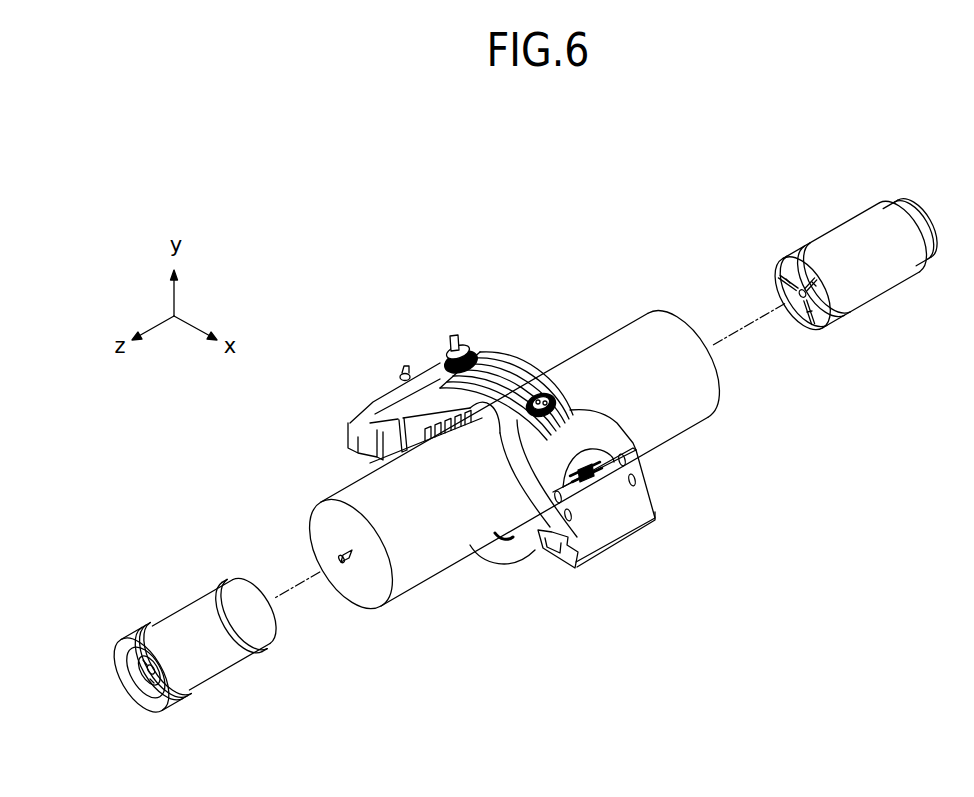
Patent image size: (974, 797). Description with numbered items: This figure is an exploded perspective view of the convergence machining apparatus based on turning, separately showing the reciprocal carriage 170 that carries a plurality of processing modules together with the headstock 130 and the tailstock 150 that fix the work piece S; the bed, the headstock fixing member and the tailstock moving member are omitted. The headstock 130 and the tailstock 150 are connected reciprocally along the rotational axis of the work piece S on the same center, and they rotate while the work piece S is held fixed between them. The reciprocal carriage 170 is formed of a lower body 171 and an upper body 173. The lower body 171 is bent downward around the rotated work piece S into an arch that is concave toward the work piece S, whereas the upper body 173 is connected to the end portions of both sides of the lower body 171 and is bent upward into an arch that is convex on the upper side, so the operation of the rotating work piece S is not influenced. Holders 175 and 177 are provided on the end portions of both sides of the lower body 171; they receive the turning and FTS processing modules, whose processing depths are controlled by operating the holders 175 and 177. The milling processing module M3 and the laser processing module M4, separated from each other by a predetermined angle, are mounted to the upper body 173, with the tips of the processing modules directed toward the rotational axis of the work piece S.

The headstock 130 is at (185, 613).
The tailstock 150 is at (855, 228).
The work piece S is at (326, 532).
The reciprocal carriage 170 is at (546, 524).
The lower body 171 is at (488, 557).
The upper body 173 is at (533, 540).
The holder 175 is at (633, 445).
The holder 177 is at (405, 422).
The milling processing module M3 is at (465, 347).
The laser processing module M4 is at (557, 385).